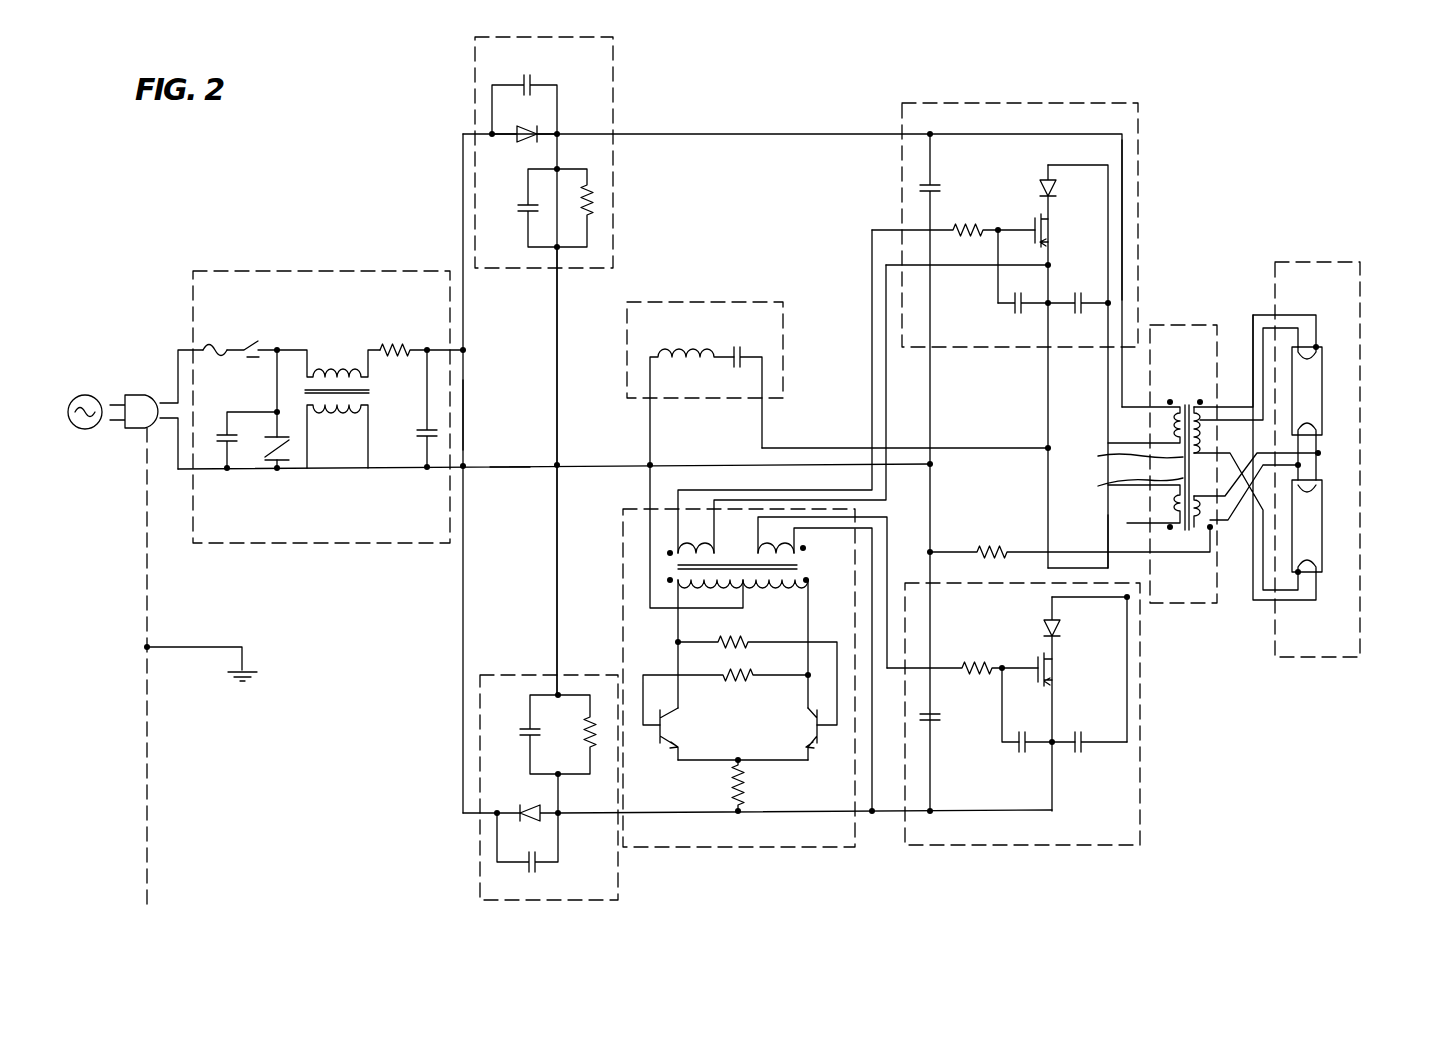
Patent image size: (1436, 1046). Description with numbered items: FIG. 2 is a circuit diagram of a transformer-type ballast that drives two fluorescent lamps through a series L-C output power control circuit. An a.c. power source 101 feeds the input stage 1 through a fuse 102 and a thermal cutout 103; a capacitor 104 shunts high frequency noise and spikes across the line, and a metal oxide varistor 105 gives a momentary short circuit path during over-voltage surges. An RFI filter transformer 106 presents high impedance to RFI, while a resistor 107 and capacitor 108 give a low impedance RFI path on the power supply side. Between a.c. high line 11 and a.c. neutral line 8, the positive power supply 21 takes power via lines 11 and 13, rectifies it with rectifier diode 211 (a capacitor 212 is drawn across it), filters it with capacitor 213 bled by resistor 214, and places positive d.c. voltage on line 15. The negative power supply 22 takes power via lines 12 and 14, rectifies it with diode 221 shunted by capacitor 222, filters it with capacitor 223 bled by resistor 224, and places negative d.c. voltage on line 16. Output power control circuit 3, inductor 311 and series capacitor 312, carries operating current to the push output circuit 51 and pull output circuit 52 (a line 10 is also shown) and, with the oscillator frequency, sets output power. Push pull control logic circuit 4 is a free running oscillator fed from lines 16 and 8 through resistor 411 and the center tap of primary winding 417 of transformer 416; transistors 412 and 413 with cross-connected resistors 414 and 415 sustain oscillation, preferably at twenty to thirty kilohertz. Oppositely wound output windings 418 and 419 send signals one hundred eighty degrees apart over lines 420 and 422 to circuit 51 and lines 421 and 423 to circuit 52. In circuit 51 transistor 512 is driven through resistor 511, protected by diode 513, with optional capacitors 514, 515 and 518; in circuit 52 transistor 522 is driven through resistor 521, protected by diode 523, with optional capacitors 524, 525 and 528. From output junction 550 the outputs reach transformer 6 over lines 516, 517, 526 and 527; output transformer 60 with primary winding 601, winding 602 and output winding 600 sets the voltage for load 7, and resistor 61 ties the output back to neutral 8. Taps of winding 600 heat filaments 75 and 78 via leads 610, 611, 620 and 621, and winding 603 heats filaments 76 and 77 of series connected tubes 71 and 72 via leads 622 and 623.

The input filter circuit 1 is at (238, 271).
The a.c. power source 101 is at (88, 395).
The fuse 102 is at (213, 349).
The thermal cutout 103 is at (254, 346).
The capacitor 104 is at (230, 447).
The metal oxide varistor 105 is at (292, 465).
The RFI filter transformer 106 is at (338, 376).
The resistor 107 is at (392, 347).
The capacitor 108 is at (424, 429).
The a.c. high line 11 is at (463, 322).
The line 12 is at (463, 399).
The line 13 is at (557, 330).
The line 14 is at (557, 547).
The positive d.c. line 15 is at (688, 134).
The negative d.c. line 16 is at (634, 814).
The a.c. neutral line 8 is at (513, 467).
The line 10 is at (979, 448).
The positive power supply 21 is at (475, 90).
The rectifier diode 211 is at (519, 149).
The capacitor 212 is at (535, 82).
The capacitor 213 is at (523, 212).
The resistor 214 is at (606, 202).
The negative power supply 22 is at (480, 858).
The rectifier diode 221 is at (528, 805).
The capacitor 222 is at (540, 865).
The capacitor 223 is at (522, 734).
The resistor 224 is at (585, 741).
The output power control circuit 3 is at (748, 302).
The inductor 311 is at (684, 350).
The series capacitor 312 is at (760, 333).
The push pull control logic circuit 4 is at (623, 597).
The resistor 411 is at (748, 793).
The transistor 412 is at (668, 738).
The transistor 413 is at (808, 738).
The resistor 414 is at (740, 676).
The resistor 415 is at (745, 644).
The transformer 416 is at (805, 581).
The primary winding 417 is at (772, 581).
The output winding 418 is at (677, 548).
The output winding 419 is at (796, 549).
The line 420 is at (872, 478).
The line 421 is at (887, 545).
The line 422 is at (886, 490).
The line 423 is at (872, 580).
The push output circuit 51 is at (1130, 103).
The resistor 511 is at (975, 230).
The transistor 512 is at (1048, 233).
The diode 513 is at (1052, 188).
The capacitor 514 is at (935, 188).
The capacitor 515 is at (1012, 308).
The line 516 is at (1108, 359).
The line 517 is at (1138, 154).
The capacitor 518 is at (1080, 297).
The pull output circuit 52 is at (1140, 822).
The resistor 521 is at (976, 668).
The transistor 522 is at (1052, 672).
The diode 523 is at (1058, 628).
The capacitor 524 is at (938, 722).
The capacitor 525 is at (1022, 756).
The line 526 is at (1108, 516).
The line 527 is at (1126, 708).
The capacitor 528 is at (1080, 756).
The output junction 550 is at (1048, 448).
The resistor 61 is at (998, 552).
The conditioner circuit or transformer 6 is at (1198, 324).
The output transformer 60 is at (1186, 407).
The output winding 600 is at (1208, 430).
The primary winding 601 is at (1168, 430).
The primary winding 602 is at (1168, 510).
The winding 603 is at (1195, 513).
The lead 610 is at (1260, 408).
The lead 611 is at (1235, 402).
The lead 620 is at (1122, 457).
The lead 621 is at (1121, 489).
The lead 622 is at (1255, 532).
The lead 623 is at (1225, 532).
The load 7 is at (1330, 262).
The fluorescent tube 71 is at (1322, 395).
The fluorescent tube 72 is at (1322, 530).
The filament 75 is at (1318, 355).
The filament 76 is at (1320, 430).
The filament 77 is at (1320, 493).
The filament 78 is at (1320, 568).